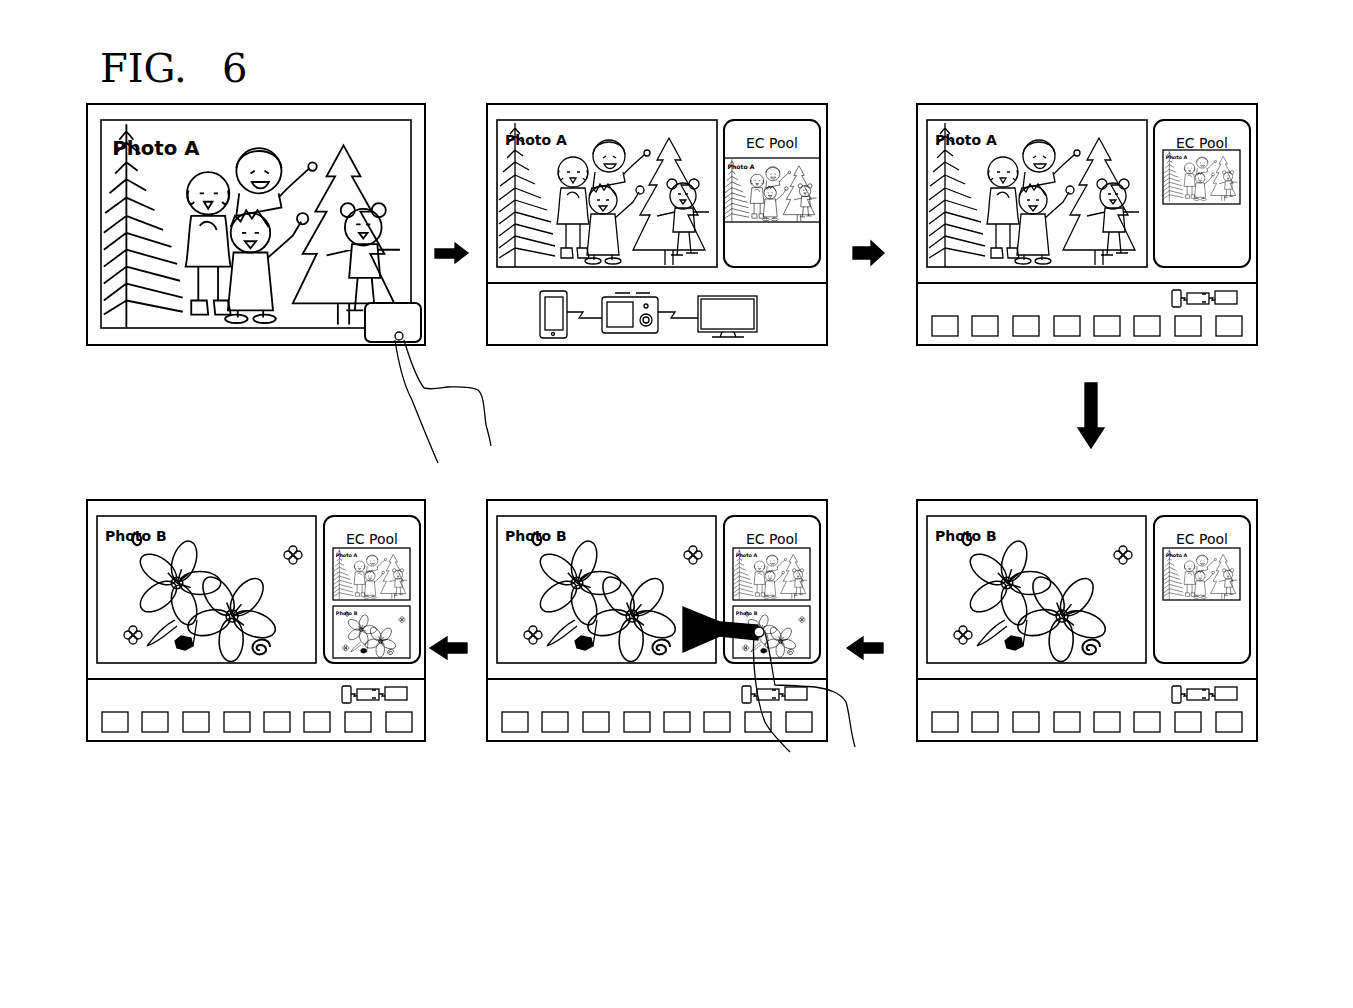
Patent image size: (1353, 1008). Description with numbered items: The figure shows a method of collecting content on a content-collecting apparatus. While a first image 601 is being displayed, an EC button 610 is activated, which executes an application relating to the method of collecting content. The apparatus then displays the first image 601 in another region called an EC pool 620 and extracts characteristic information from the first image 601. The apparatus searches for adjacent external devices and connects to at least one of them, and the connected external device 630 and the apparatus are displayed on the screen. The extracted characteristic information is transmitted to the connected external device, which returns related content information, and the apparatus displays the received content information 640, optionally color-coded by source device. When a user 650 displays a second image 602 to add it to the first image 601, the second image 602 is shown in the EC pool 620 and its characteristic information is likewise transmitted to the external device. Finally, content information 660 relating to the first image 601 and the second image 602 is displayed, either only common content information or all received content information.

The first image 601 is at (336, 120).
The second image 602 is at (597, 516).
The EC button 610 is at (379, 342).
The EC pool 620 is at (768, 120).
The external device 630 is at (775, 314).
The content information 640 is at (1263, 326).
The user 650 is at (792, 755).
The content information relating to the first image and the second image 660 is at (424, 724).